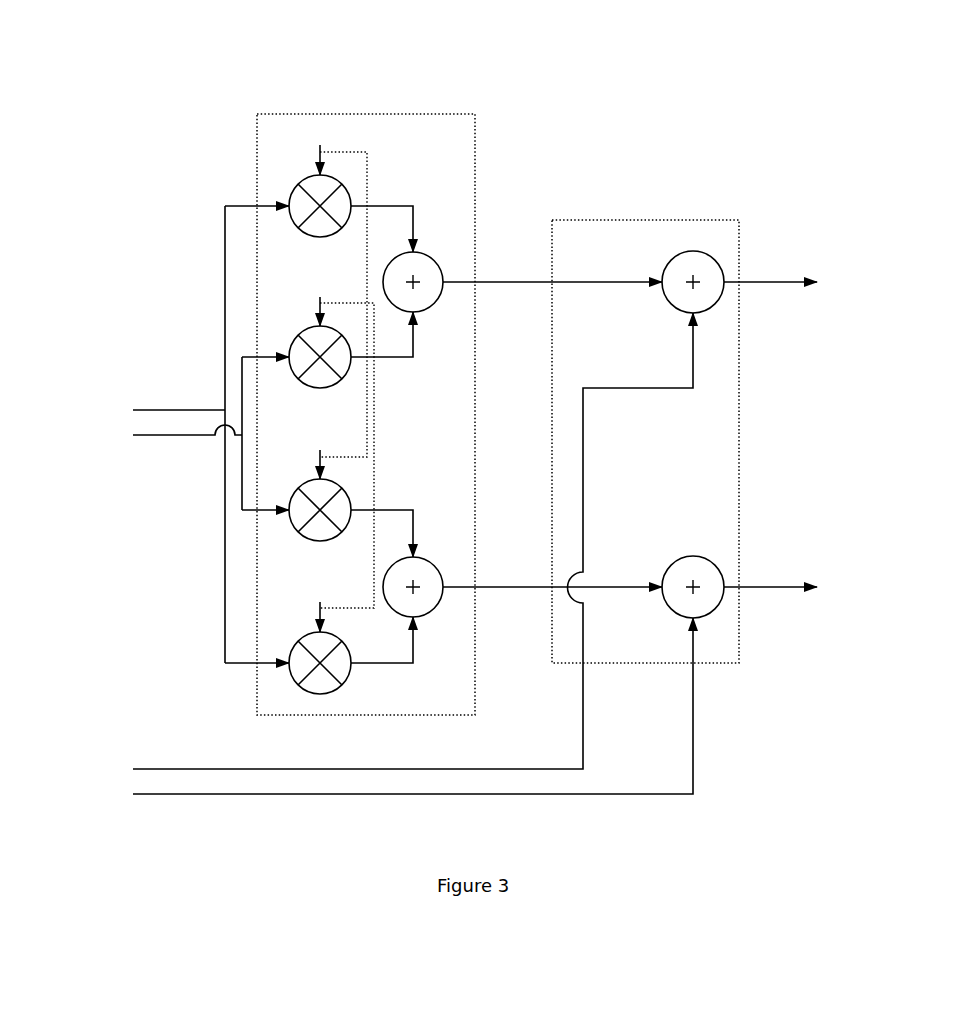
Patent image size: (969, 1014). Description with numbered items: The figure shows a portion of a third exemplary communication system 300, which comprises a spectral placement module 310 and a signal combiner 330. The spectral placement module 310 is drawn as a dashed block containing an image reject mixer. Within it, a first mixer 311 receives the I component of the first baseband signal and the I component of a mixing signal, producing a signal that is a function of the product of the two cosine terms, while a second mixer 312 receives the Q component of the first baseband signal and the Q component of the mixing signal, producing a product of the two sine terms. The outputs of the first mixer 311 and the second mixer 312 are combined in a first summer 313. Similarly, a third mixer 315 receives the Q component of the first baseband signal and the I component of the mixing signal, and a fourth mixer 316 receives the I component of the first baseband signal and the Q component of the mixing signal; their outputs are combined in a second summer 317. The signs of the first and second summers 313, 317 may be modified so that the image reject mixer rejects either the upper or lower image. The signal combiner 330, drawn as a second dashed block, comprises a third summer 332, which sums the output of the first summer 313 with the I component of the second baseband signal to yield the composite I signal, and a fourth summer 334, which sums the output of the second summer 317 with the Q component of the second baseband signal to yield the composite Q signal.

The communication system 300 is at (98, 67).
The spectral placement module 310 is at (365, 114).
The first mixer 311 is at (309, 235).
The second mixer 312 is at (309, 386).
The first summer 313 is at (419, 255).
The third mixer 315 is at (309, 539).
The fourth mixer 316 is at (309, 692).
The second summer 317 is at (419, 560).
The signal combiner 330 is at (657, 220).
The third summer 332 is at (683, 312).
The fourth summer 334 is at (683, 617).